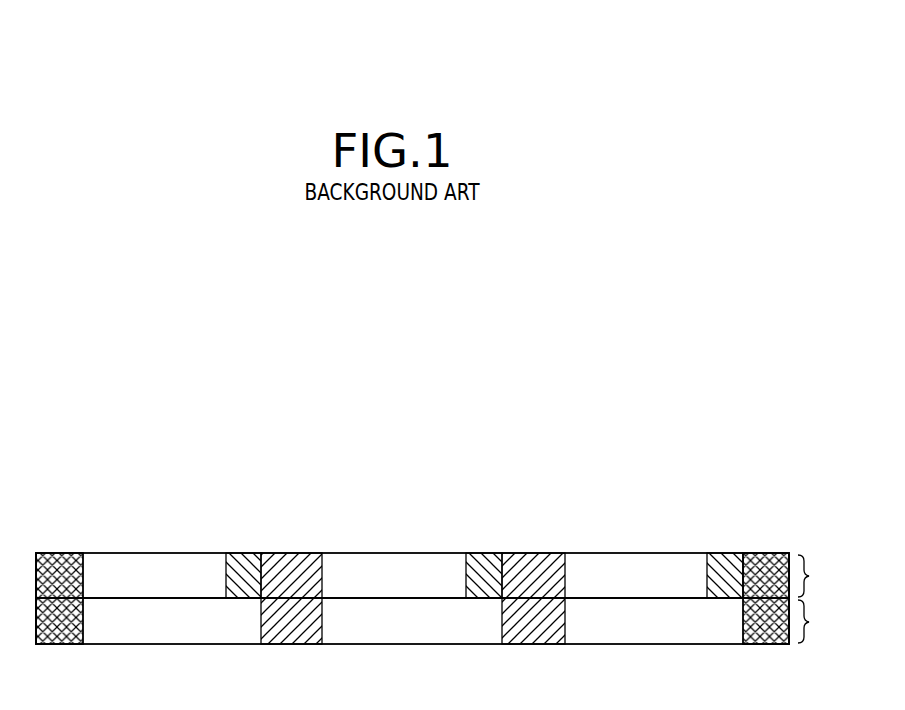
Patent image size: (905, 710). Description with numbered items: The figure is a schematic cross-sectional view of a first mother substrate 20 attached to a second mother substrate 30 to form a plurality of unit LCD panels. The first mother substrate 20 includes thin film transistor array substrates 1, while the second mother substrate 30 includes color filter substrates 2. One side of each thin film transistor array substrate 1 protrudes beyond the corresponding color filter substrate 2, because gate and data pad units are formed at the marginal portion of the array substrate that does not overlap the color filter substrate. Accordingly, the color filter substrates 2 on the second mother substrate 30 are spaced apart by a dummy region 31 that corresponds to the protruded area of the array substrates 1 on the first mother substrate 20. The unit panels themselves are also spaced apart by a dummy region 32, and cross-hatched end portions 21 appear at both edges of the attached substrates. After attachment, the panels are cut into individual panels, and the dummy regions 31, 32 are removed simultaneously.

The thin film transistor array substrate 1 is at (170, 630).
The color filter substrate 2 is at (171, 572).
The first mother substrate 20 is at (821, 621).
The sealant 21 is at (58, 568).
The second mother substrate 30 is at (821, 576).
The dummy region 31 is at (243, 568).
The dummy region 32 is at (293, 570).